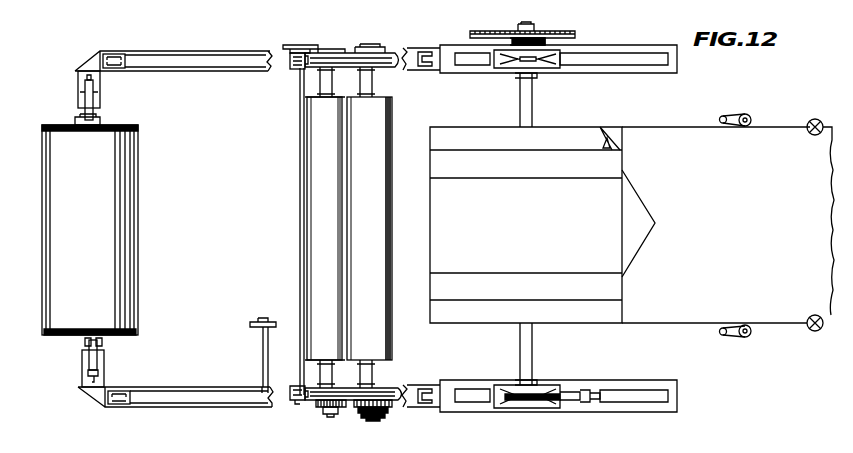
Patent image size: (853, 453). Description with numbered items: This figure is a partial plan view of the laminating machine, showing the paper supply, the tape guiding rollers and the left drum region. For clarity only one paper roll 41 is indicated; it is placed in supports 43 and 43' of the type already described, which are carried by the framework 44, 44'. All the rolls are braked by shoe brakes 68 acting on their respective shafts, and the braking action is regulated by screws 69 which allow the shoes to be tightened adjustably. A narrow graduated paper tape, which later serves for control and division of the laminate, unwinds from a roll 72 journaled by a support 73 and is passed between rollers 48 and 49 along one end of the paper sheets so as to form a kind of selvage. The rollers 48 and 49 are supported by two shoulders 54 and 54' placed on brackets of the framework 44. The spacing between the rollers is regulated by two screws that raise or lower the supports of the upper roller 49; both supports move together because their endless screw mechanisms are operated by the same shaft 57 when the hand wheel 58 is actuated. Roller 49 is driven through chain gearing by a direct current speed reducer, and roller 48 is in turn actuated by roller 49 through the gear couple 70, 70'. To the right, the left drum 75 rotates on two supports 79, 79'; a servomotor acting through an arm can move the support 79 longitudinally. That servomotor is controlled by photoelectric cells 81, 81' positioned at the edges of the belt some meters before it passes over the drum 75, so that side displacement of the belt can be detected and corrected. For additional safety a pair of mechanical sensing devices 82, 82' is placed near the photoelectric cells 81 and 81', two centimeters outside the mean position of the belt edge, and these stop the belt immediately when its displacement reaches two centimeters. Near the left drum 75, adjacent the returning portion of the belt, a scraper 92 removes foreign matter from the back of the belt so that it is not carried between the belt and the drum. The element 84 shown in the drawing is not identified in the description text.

The paper roll 41 is at (52, 182).
The support 43 is at (69, 363).
The support 43' is at (64, 98).
The framework 44 is at (175, 412).
The framework 44' is at (173, 45).
The roller 48 is at (309, 148).
The roller 49 is at (378, 140).
The shoulder 54 is at (346, 419).
The shoulder 54' is at (352, 40).
The shaft 57 is at (299, 92).
The hand wheel 58 is at (305, 38).
The shoe brake 68 is at (85, 343).
The screw 69 is at (102, 343).
The gear 70 is at (318, 426).
The gear 70' is at (386, 426).
The roll 72 is at (256, 327).
The support 73 is at (265, 390).
The left drum 75 is at (570, 150).
The support 79 is at (539, 380).
The support 79' is at (546, 28).
The photoelectric cell 81 is at (808, 343).
The photoelectric cell 81' is at (820, 201).
The mechanical sensing device 82 is at (714, 347).
The mechanical sensing device 82' is at (716, 103).
The upper carriage rail 84 is at (578, 42).
The scraper 92 is at (610, 140).